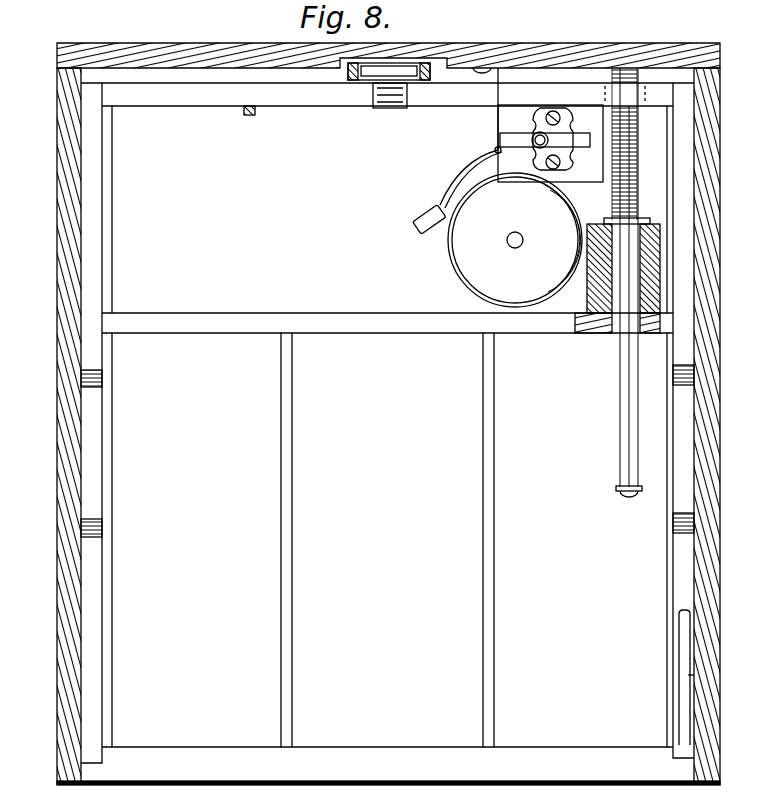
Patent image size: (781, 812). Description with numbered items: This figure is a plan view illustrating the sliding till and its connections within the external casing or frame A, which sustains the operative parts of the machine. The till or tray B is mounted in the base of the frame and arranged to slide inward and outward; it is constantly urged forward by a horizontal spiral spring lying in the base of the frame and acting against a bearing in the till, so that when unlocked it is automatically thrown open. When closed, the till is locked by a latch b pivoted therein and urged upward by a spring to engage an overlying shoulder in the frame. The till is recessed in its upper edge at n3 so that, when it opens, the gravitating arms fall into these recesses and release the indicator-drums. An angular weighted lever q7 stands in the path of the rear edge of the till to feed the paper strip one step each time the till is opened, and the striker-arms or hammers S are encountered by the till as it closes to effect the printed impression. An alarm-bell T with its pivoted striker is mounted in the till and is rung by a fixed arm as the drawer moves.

The external casing or frame A is at (63, 569).
The till or tray B is at (387, 433).
The alarm-bell T is at (536, 282).
The striker-arms or hammers S is at (355, 81).
The angular weighted lever q7 is at (250, 115).
The recess in the upper edge of the till n3 is at (93, 464).
The latch b is at (684, 655).